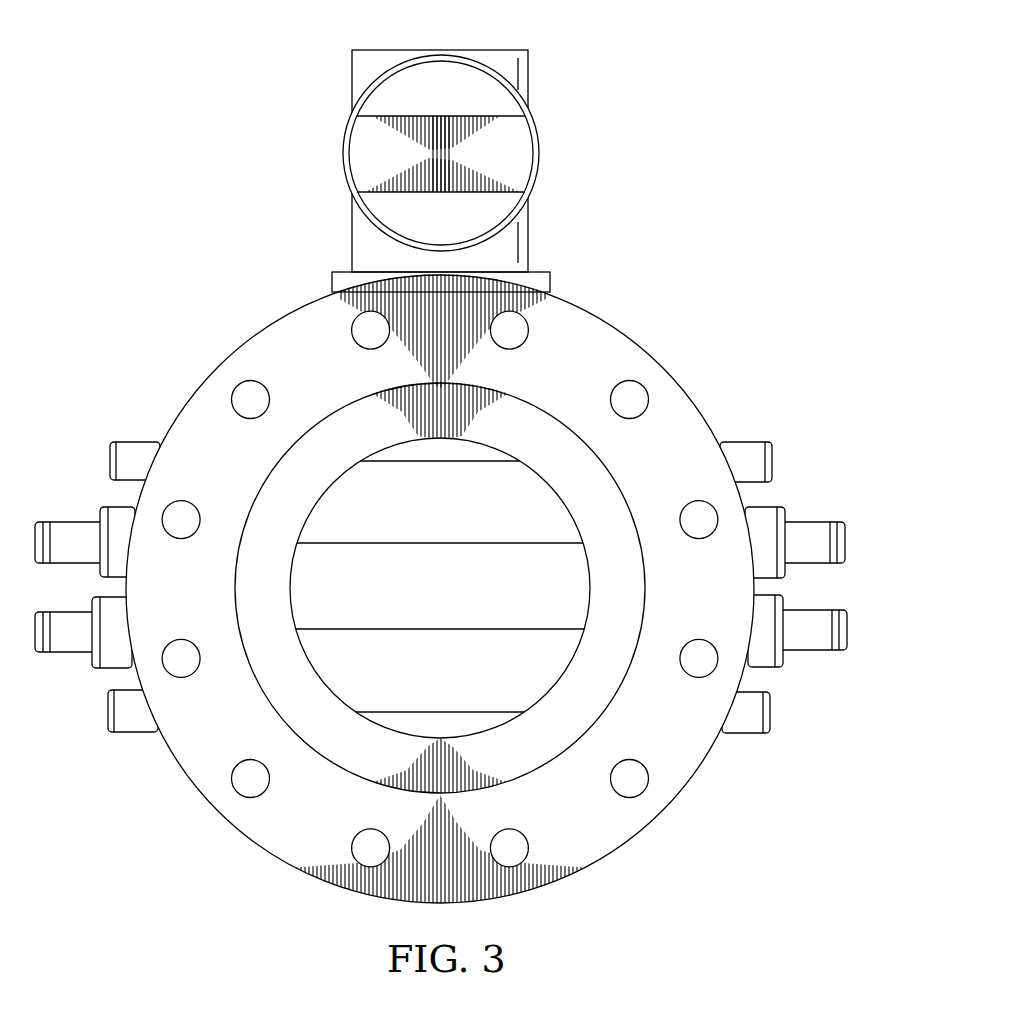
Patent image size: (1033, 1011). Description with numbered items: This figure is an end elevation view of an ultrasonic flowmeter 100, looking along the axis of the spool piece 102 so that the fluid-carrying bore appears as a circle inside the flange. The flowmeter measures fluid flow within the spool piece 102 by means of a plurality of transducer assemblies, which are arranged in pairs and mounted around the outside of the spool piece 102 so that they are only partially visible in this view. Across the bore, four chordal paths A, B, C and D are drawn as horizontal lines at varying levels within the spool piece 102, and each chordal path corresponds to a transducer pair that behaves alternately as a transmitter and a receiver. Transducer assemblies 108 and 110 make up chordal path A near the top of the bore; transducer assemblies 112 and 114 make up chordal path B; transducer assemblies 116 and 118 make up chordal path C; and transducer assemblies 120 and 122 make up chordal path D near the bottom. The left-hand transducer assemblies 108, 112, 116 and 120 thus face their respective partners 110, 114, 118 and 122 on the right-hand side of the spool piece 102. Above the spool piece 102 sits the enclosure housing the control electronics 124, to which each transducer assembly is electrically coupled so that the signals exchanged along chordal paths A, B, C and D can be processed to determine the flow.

The ultrasonic flowmeter 100 is at (441, 468).
The spool piece 102 is at (232, 349).
The transducer assembly 108 is at (108, 466).
The transducer assembly 110 is at (773, 464).
The transducer assembly 112 is at (63, 520).
The transducer assembly 114 is at (817, 519).
The transducer assembly 116 is at (63, 653).
The transducer assembly 118 is at (817, 653).
The transducer assembly 120 is at (108, 713).
The transducer assembly 122 is at (771, 712).
The control electronics 124 is at (343, 157).
The chordal path A is at (456, 464).
The chordal path B is at (427, 546).
The chordal path C is at (456, 633).
The chordal path D is at (427, 709).